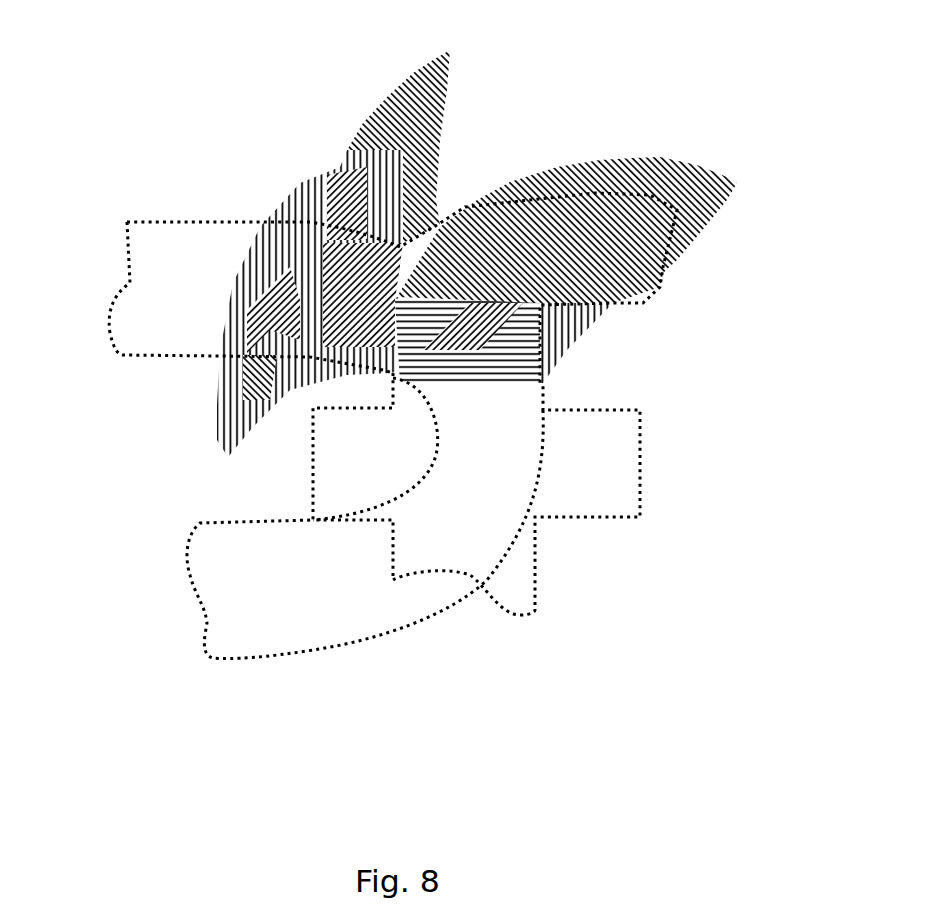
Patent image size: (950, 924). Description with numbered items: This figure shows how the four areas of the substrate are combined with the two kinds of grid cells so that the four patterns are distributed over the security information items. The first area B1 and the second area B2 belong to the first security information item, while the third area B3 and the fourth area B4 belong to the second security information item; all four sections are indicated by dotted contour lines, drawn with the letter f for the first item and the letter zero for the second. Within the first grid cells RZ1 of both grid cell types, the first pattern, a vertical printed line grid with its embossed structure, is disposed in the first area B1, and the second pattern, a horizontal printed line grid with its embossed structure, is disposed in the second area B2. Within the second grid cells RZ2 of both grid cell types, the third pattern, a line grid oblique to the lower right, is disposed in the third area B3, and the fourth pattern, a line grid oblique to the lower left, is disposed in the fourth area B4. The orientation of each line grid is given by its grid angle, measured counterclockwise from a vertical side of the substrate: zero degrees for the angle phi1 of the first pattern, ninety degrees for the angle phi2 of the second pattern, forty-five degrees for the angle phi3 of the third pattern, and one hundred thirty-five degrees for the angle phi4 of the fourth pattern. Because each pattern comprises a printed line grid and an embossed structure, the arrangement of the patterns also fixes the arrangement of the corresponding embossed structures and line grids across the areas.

The first grid cells RZ1 is at (300, 203).
The second grid cells RZ2 is at (400, 100).
The first area B1 is at (626, 539).
The second area B2 is at (625, 457).
The third area B3 is at (131, 407).
The fourth area B4 is at (142, 348).
The grid angle phi1 is at (672, 628).
The grid angle phi2 is at (655, 687).
The grid angle phi3 is at (662, 720).
The grid angle phi4 is at (663, 791).